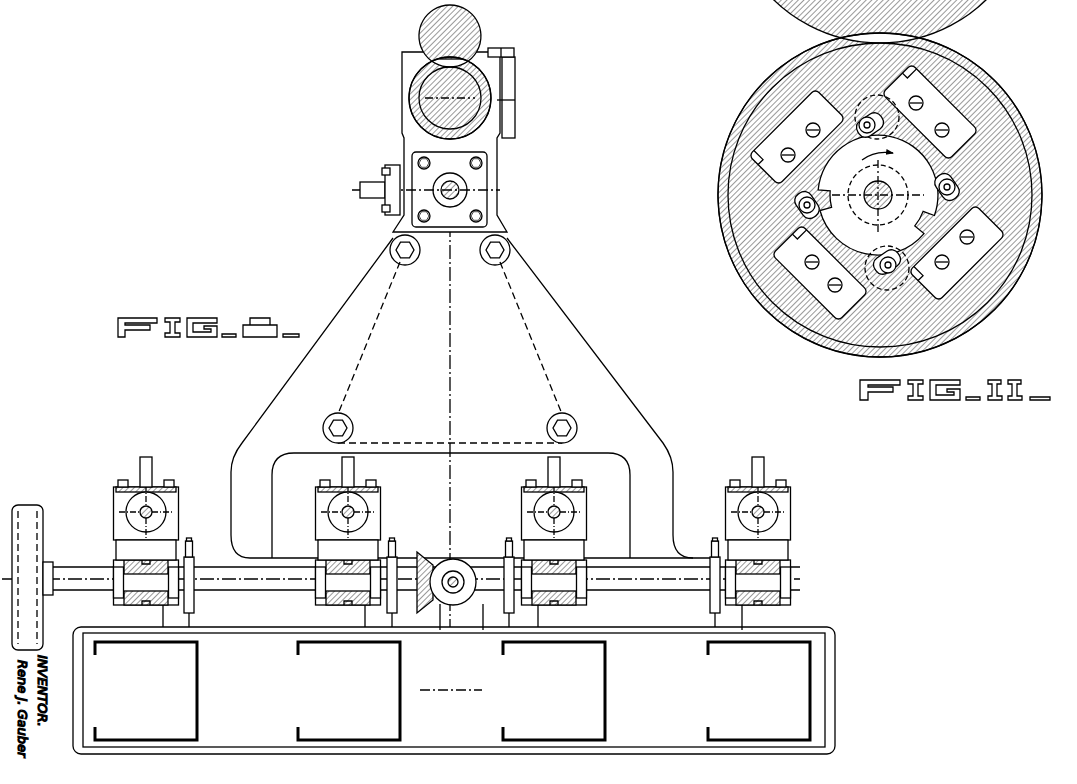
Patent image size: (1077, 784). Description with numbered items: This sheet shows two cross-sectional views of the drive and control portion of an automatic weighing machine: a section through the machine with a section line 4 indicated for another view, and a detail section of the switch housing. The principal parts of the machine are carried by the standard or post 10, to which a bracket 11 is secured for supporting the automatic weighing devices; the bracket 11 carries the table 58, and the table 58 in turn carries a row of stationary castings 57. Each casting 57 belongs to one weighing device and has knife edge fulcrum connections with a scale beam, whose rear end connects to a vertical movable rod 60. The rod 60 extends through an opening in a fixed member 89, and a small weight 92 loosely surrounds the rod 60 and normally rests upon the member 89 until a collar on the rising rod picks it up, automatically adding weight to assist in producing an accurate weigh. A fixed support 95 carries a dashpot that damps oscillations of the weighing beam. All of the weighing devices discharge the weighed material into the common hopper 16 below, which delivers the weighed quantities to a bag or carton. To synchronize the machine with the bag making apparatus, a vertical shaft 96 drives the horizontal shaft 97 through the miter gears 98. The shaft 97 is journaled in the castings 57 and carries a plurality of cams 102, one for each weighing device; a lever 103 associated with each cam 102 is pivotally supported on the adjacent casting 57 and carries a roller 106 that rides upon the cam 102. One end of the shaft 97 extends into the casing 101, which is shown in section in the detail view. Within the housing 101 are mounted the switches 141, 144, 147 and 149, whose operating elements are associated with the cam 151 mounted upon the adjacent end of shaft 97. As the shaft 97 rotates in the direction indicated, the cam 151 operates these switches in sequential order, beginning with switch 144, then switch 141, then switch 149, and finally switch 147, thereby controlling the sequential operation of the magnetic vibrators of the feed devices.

In FIG. 8, the post 10 is at (410, 103).
In FIG. 8, the bracket 11 is at (556, 376).
In FIG. 8, the section line 4- 4 is at (316, 470).
In FIG. 8, the common hopper 16 is at (835, 690).
In FIG. 8, the stationary casting 57 is at (120, 558).
In FIG. 8, the table 58 is at (636, 411).
In FIG. 8, the vertical movable rod 60 is at (141, 512).
In FIG. 8, the fixed member 89 is at (172, 503).
In FIG. 8, the small weight 92 is at (133, 518).
In FIG. 8, the fixed support 95 is at (152, 487).
In FIG. 8, the vertical shaft 96 is at (464, 562).
In FIG. 8, the horizontal shaft 97 is at (630, 585).
In FIG. 11, the horizontal shaft 97 is at (870, 214).
In FIG. 8, the miter gears 98 is at (443, 565).
In FIG. 8, the casing 101 is at (45, 513).
In FIG. 11, the casing 101 is at (718, 231).
In FIG. 8, the cam 102 is at (194, 607).
In FIG. 8, the lever 103 is at (191, 551).
In FIG. 8, the roller 106 is at (451, 525).
In FIG. 11, the switch 141 is at (809, 282).
In FIG. 11, the switch 144 is at (965, 261).
In FIG. 11, the switch 147 is at (940, 107).
In FIG. 11, the switch 149 is at (794, 129).
In FIG. 11, the cam 151 is at (934, 210).